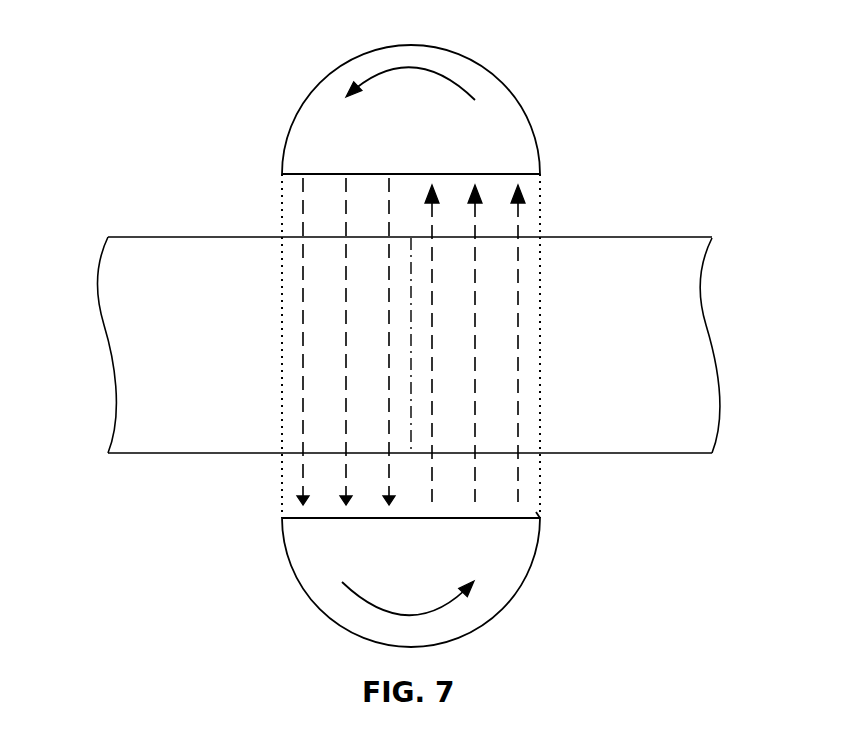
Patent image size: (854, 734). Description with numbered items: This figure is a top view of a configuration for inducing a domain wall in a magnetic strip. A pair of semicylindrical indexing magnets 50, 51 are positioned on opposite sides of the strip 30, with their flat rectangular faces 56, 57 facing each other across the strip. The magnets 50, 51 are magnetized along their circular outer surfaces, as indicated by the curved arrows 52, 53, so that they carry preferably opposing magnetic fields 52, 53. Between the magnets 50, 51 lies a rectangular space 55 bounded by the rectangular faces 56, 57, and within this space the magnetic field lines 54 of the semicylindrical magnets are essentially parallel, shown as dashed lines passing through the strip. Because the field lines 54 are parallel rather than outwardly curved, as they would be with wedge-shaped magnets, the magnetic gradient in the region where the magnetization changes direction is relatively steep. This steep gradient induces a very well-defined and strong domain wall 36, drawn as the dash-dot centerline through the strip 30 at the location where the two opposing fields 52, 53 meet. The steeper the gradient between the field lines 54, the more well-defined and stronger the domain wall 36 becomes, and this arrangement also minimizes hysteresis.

The sheet 30 is at (195, 237).
The domain wall 36 is at (410, 303).
The indexing magnet 50 is at (428, 131).
The indexing magnet 51 is at (425, 578).
The magnetic field 52 is at (467, 92).
The magnetic field 53 is at (357, 592).
The magnetic field lines 54 is at (518, 312).
The rectangular space 55 is at (282, 313).
The rectangular face 56 is at (530, 176).
The rectangular face 57 is at (528, 517).